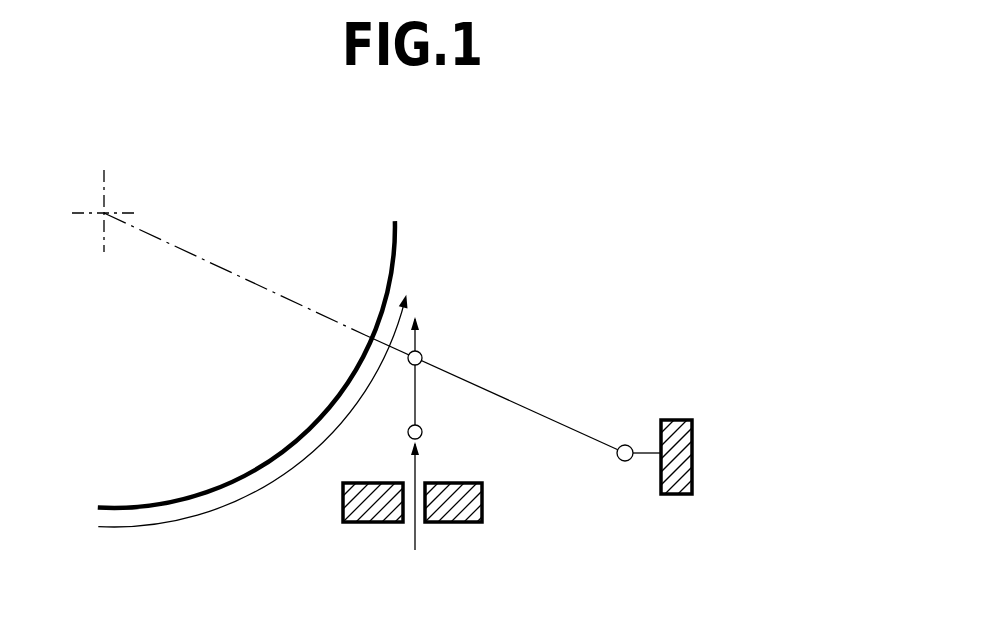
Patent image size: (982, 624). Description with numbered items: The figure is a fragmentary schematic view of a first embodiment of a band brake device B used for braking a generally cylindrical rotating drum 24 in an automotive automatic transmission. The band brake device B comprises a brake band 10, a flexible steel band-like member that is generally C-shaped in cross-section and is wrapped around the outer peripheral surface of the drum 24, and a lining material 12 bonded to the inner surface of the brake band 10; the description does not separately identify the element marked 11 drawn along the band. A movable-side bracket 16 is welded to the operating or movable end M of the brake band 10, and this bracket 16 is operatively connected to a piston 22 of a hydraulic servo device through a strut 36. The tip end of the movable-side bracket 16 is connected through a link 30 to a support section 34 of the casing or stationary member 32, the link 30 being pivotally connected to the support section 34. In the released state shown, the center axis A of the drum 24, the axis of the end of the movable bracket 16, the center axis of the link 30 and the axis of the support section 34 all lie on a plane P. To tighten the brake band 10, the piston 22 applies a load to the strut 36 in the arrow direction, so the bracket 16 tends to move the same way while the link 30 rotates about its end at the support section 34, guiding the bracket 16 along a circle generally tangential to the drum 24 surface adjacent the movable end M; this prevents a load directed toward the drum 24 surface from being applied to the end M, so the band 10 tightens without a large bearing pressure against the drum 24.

The center axis A is at (105, 212).
The plane P is at (223, 270).
The band brake device B is at (564, 241).
The movable end M is at (380, 353).
The brake band 10 is at (253, 418).
The inner surface of disc 11 is at (266, 492).
The lining material 12 is at (197, 499).
The movable-side bracket 16 is at (410, 313).
The piston 22 is at (412, 548).
The rotating drum 24 is at (364, 241).
The link 30 is at (517, 403).
The casing 32 is at (693, 430).
The support section 34 is at (625, 445).
The strut 36 is at (413, 402).